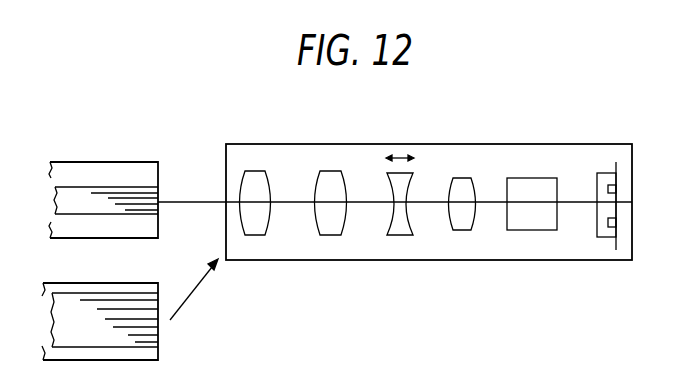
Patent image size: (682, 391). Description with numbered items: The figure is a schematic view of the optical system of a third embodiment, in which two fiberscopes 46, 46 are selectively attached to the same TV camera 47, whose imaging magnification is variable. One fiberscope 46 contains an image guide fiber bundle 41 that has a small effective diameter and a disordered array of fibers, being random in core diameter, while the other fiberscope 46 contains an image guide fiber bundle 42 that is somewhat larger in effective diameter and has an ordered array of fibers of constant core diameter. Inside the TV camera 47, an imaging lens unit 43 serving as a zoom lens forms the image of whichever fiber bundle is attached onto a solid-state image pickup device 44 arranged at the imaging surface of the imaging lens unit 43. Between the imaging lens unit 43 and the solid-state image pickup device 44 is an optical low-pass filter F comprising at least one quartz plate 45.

The image guide fiber bundle 41 is at (140, 207).
The image guide fiber bundle 42 is at (143, 331).
The imaging lens unit 43 is at (568, 133).
The solid-state image pickup device 44 is at (607, 240).
The quartz plate 45 is at (535, 230).
The fiberscope 46 is at (137, 162).
The TV camera 47 is at (597, 144).